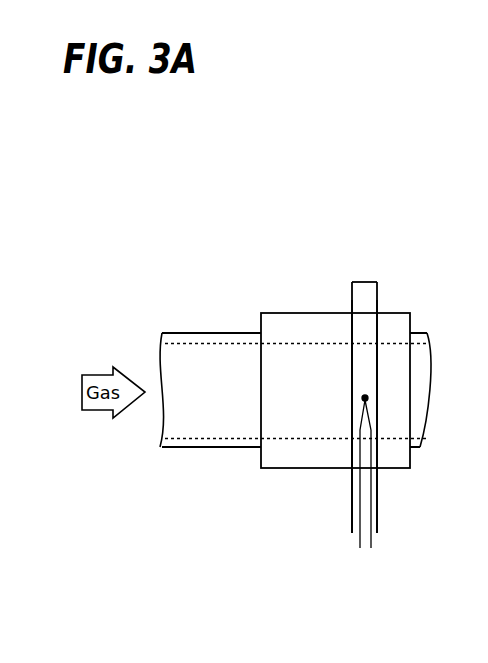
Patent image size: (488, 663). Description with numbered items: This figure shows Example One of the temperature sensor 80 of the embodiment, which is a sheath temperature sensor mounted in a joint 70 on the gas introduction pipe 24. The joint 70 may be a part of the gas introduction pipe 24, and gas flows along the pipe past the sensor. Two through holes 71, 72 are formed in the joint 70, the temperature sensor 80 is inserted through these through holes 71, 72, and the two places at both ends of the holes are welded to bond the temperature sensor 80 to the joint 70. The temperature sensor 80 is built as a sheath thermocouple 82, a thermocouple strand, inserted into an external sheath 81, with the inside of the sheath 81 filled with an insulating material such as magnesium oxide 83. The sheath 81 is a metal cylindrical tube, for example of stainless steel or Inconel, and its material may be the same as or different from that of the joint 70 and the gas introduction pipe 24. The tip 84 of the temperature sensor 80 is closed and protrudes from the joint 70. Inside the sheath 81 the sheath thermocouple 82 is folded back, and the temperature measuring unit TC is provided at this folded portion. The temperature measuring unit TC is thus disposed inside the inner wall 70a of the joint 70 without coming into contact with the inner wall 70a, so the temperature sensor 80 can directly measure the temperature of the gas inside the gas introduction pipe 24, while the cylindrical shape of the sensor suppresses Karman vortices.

The gas introduction pipe 24 is at (210, 448).
The joint 70 is at (279, 469).
The inner wall 70a is at (292, 346).
The through hole 71 is at (350, 452).
The through hole 72 is at (350, 330).
The temperature sensor 80 is at (386, 505).
The sheath 81 is at (377, 412).
The sheath thermocouple 82 is at (377, 439).
The magnesium oxide 83 is at (365, 353).
The tip 84 is at (363, 282).
The temperature measuring unit TC is at (375, 388).